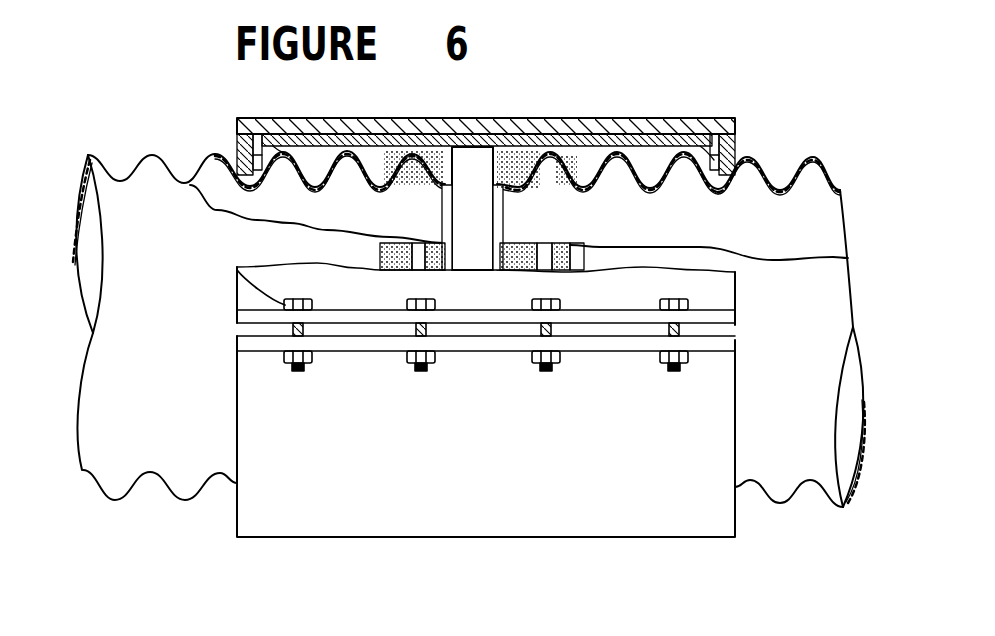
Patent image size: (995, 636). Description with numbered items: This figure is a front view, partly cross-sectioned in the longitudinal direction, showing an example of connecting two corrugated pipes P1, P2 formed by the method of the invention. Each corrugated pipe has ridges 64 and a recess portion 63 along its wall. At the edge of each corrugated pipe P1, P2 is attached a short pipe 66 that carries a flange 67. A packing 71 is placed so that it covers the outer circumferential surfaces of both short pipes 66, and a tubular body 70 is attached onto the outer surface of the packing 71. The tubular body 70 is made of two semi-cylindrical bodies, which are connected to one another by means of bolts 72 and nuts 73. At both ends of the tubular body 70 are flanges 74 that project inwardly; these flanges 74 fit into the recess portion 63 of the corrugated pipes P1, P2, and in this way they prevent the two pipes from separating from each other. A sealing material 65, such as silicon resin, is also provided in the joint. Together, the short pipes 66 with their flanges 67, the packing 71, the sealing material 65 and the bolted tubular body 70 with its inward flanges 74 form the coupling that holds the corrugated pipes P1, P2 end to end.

The recess portion 63 is at (252, 186).
The ridges 64 is at (155, 158).
The sealing material 65 is at (528, 165).
The short pipes 66 is at (370, 150).
The flange 67 is at (443, 190).
The tubular body 70 is at (662, 133).
The packing 71 is at (473, 140).
The bolts 72 is at (237, 273).
The nuts 73 is at (300, 371).
The flanges 74 is at (233, 153).
The corrugated pipe P1 is at (125, 348).
The corrugated pipe P2 is at (813, 325).